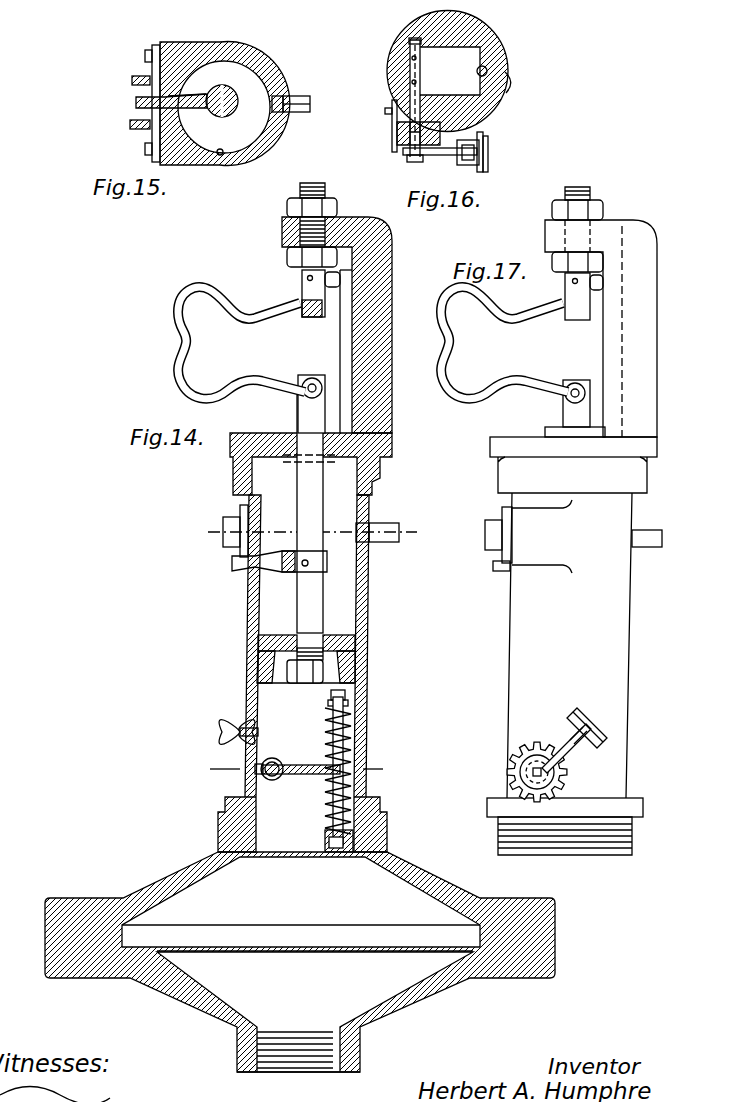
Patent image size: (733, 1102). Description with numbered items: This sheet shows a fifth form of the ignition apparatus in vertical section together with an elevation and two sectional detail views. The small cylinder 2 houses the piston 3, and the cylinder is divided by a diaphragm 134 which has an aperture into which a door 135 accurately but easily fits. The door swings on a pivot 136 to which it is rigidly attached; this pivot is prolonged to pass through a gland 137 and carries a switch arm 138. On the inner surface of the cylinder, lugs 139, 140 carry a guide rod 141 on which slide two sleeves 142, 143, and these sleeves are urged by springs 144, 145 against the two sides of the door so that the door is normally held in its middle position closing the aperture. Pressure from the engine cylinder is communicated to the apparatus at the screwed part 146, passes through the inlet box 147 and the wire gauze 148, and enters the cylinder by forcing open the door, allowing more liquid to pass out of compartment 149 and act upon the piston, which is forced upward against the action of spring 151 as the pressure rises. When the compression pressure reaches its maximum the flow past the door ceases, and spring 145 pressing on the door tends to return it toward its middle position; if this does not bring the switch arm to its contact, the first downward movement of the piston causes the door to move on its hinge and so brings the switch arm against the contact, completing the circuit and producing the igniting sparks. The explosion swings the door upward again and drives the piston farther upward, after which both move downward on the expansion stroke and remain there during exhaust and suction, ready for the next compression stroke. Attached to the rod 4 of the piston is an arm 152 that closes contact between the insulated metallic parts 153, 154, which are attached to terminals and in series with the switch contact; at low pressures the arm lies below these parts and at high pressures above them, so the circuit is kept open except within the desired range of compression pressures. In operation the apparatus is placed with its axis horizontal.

In FIG. 15, the cylinder 2 is at (220, 156).
In FIG. 14, the cylinder 2 is at (246, 693).
In FIG. 17, the cylinder 2 is at (574, 537).
In FIG. 14, the piston 3 is at (306, 659).
In FIG. 15, the rod 4 is at (232, 109).
In FIG. 14, the rod 4 is at (311, 421).
In FIG. 17, the rod 4 is at (570, 413).
In FIG. 16, the diaphragm 134 is at (416, 38).
In FIG. 14, the diaphragm 134 is at (272, 780).
In FIG. 16, the door 135 is at (447, 71).
In FIG. 14, the door 135 is at (306, 776).
In FIG. 16, the pivot 136 is at (410, 100).
In FIG. 14, the pivot 136 is at (274, 762).
In FIG. 16, the gland 137 is at (400, 145).
In FIG. 17, the gland 137 is at (518, 763).
In FIG. 16, the switch arm 138 is at (440, 155).
In FIG. 17, the switch arm 138 is at (566, 750).
In FIG. 14, the lug 139 is at (325, 838).
In FIG. 14, the lug 140 is at (330, 705).
In FIG. 16, the guide rod 141 is at (487, 74).
In FIG. 14, the guide rod 141 is at (345, 720).
In FIG. 14, the sleeve 142 is at (367, 795).
In FIG. 14, the sleeve 143 is at (353, 745).
In FIG. 14, the spring 144 is at (366, 827).
In FIG. 14, the spring 145 is at (328, 727).
In FIG. 14, the screwed part 146 is at (323, 1044).
In FIG. 14, the inlet box 147 is at (298, 1023).
In FIG. 14, the wire gauze 148 is at (313, 946).
In FIG. 14, the compartment 149 is at (238, 826).
In FIG. 14, the spring 151 is at (241, 342).
In FIG. 17, the spring 151 is at (504, 342).
In FIG. 15, the arm 152 is at (186, 98).
In FIG. 14, the arm 152 is at (258, 565).
In FIG. 17, the arm 152 is at (503, 571).
In FIG. 15, the insulated metallic part 153 is at (137, 106).
In FIG. 17, the insulated metallic part 153 is at (492, 530).
In FIG. 15, the insulated metallic part 154 is at (145, 90).
In FIG. 14, the insulated metallic part 154 is at (232, 520).